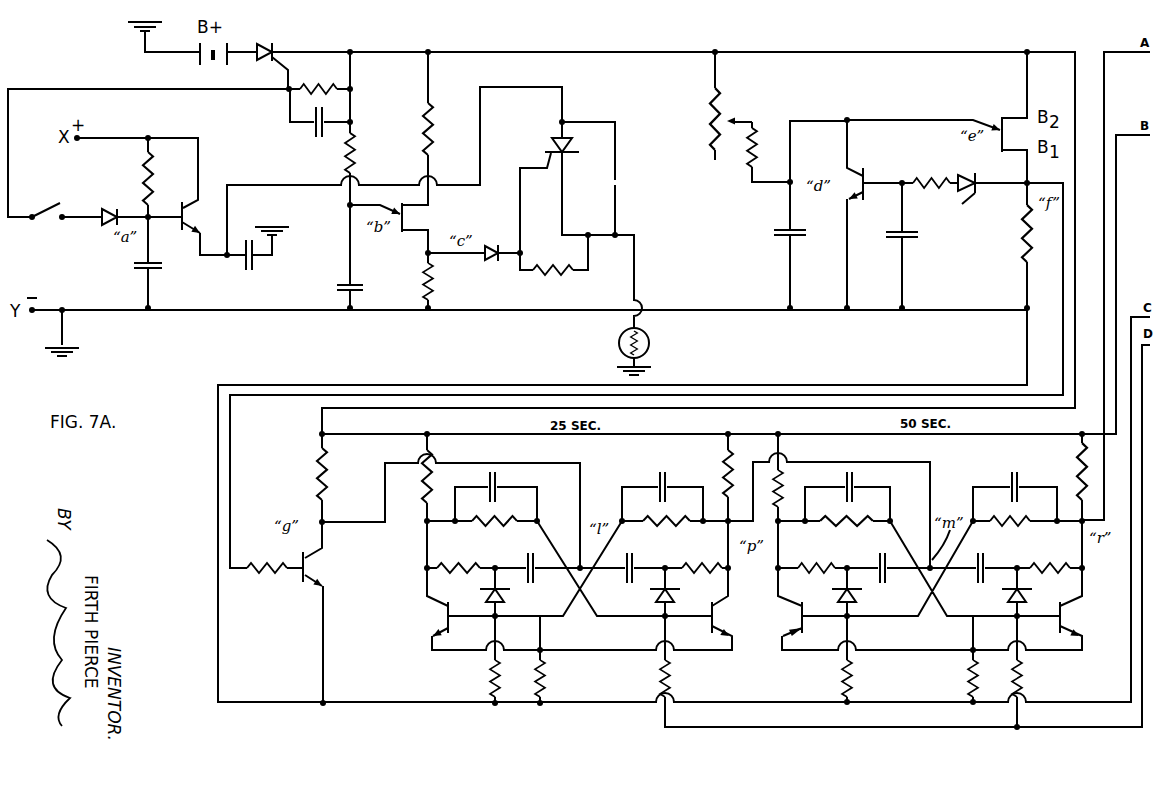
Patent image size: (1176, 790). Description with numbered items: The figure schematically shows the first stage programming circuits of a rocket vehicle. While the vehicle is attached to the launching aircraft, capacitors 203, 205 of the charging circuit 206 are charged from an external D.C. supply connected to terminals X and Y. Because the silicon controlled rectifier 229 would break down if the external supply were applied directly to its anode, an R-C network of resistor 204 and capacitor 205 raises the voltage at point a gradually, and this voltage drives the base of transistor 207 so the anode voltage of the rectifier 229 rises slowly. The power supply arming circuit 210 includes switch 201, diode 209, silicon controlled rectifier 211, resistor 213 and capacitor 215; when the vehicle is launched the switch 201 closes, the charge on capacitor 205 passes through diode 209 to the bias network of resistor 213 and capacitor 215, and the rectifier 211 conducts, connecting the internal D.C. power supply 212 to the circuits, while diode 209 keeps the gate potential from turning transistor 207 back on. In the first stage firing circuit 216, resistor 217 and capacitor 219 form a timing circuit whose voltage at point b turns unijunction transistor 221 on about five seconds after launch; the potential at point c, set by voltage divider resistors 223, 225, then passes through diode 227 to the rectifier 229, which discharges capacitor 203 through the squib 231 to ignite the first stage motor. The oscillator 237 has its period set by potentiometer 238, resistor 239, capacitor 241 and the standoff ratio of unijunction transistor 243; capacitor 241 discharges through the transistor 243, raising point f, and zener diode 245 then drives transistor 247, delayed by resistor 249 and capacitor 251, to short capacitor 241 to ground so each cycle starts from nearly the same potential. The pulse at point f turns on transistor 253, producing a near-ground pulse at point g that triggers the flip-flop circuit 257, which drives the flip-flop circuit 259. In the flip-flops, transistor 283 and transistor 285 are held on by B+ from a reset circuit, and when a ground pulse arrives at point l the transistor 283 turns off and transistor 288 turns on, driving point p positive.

The switch 201 is at (45, 210).
The capacitor 203 is at (245, 262).
The resistor 204 is at (166, 178).
The capacitor 205 is at (140, 270).
The charging circuit 206 is at (177, 328).
The transistor 207 is at (180, 222).
The diode 209 is at (126, 192).
The first and second stage power supply arming circuit 210 is at (88, 68).
The silicon controlled rectifier 211 is at (273, 45).
The internal D.C. power supply 212 is at (200, 58).
The resistor 213 is at (302, 86).
The capacitor 215 is at (313, 132).
The first stage firing circuit 216 is at (453, 320).
The resistor 217 is at (355, 148).
The capacitor 219 is at (337, 287).
The unijunction transistor 221 is at (420, 218).
The voltage divider resistor 223 is at (446, 129).
The voltage divider resistor 225 is at (425, 276).
The diode 227 is at (488, 258).
The silicon controlled rectifier 229 is at (557, 140).
The squib 231 is at (619, 337).
The oscillator 237 is at (892, 322).
The potentiometer 238 is at (708, 106).
The resistor 239 is at (747, 167).
The capacitor 241 is at (777, 244).
The unijunction transistor 243 is at (1013, 117).
The zener diode 245 is at (968, 203).
The transistor 247 is at (845, 175).
The resistor 249 is at (920, 180).
The capacitor 251 is at (897, 242).
The transistor 253 is at (315, 570).
The flip-flop circuit 257 is at (552, 717).
The flip-flop circuit 259 is at (900, 735).
The transistor 283 is at (720, 614).
The transistor 285 is at (1068, 614).
The transistor 288 is at (440, 615).